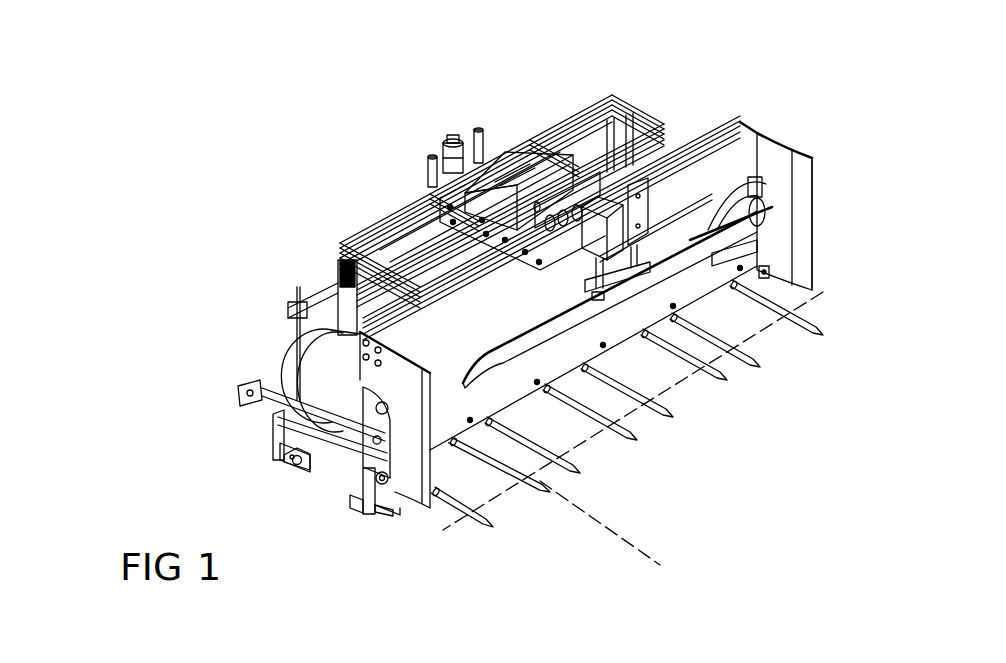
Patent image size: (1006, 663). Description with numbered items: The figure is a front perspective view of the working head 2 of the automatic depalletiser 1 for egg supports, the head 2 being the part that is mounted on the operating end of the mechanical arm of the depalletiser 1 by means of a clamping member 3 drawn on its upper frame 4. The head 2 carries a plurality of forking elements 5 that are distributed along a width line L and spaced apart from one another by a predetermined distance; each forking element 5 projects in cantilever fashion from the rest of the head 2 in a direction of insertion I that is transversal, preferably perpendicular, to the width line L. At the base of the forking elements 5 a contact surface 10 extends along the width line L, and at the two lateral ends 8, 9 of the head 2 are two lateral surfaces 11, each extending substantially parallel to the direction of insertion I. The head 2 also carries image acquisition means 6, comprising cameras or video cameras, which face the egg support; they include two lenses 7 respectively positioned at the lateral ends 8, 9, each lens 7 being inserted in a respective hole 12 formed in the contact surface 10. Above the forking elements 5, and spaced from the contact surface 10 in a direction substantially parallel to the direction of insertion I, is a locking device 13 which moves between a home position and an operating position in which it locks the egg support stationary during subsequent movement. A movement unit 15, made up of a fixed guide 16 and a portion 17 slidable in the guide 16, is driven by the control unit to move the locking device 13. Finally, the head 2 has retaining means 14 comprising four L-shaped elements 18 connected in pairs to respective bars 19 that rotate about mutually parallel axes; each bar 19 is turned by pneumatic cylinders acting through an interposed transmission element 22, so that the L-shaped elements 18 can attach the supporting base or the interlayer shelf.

The depalletiser 1 is at (178, 105).
The working head 2 is at (833, 132).
The clamping member 3 is at (510, 155).
The frame 4 is at (340, 243).
The forking elements 5 is at (768, 367).
The image acquisition means 6 is at (278, 432).
The lenses 7 is at (375, 402).
The lateral end 8 is at (398, 510).
The lateral end 9 is at (830, 273).
The contact surface 10 is at (330, 300).
The lateral surfaces 11 is at (300, 382).
The hole 12 is at (757, 233).
The locking device 13 is at (583, 268).
The retaining means 14 is at (340, 505).
The movement unit 15 is at (660, 206).
The fixed guide 16 is at (630, 120).
The slidable portion 17 is at (440, 207).
The L-shaped elements 18 is at (290, 452).
The bars 19 is at (272, 425).
The transmission element 22 is at (232, 392).
The width line L is at (830, 298).
The direction of insertion I is at (633, 537).